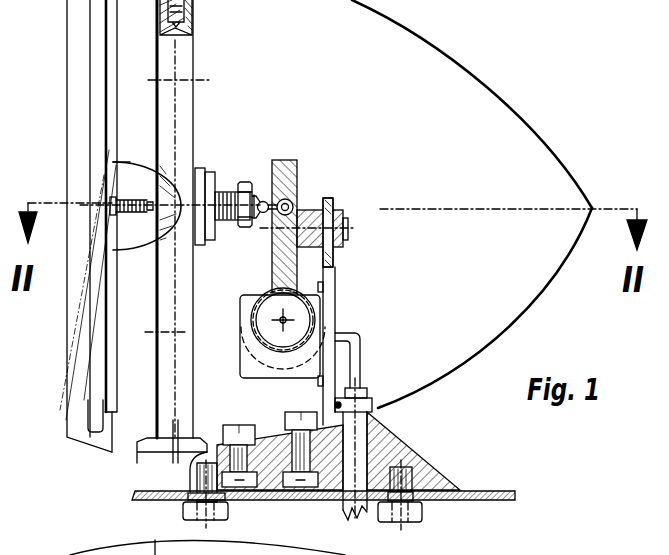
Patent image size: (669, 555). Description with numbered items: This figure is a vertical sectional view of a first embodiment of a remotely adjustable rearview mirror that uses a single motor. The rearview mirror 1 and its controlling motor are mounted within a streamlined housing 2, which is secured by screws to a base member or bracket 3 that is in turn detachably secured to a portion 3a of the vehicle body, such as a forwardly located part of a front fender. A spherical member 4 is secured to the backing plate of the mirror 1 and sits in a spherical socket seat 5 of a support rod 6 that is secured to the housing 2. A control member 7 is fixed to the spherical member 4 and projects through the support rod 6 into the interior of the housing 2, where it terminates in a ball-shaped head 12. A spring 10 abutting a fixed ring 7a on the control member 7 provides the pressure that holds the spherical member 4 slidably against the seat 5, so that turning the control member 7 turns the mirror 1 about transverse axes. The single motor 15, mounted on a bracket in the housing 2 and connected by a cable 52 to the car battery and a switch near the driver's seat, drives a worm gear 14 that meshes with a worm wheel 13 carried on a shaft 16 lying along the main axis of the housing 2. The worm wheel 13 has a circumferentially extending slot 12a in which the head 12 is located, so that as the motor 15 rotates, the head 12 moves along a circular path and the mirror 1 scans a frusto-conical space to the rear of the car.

The rearview mirror 1 is at (97, 78).
The streamlined housing 2 is at (415, 31).
The base member or bracket 3 is at (413, 450).
The portion of the vehicle body 3a is at (490, 491).
The spherical member 4 is at (133, 193).
The spherical socket seat 5 is at (175, 177).
The support rod 6 is at (168, 95).
The control member 7 is at (240, 224).
The fixed ring 7a is at (241, 188).
The spring 10 is at (225, 192).
The ball-shaped head 12 is at (297, 197).
The circumferentially extending slot 12a is at (290, 200).
The worm wheel 13 is at (287, 160).
The worm gear 14 is at (303, 320).
The motor 15 is at (258, 355).
The shaft of worm wheel 16 is at (330, 210).
The cable 52 is at (365, 464).